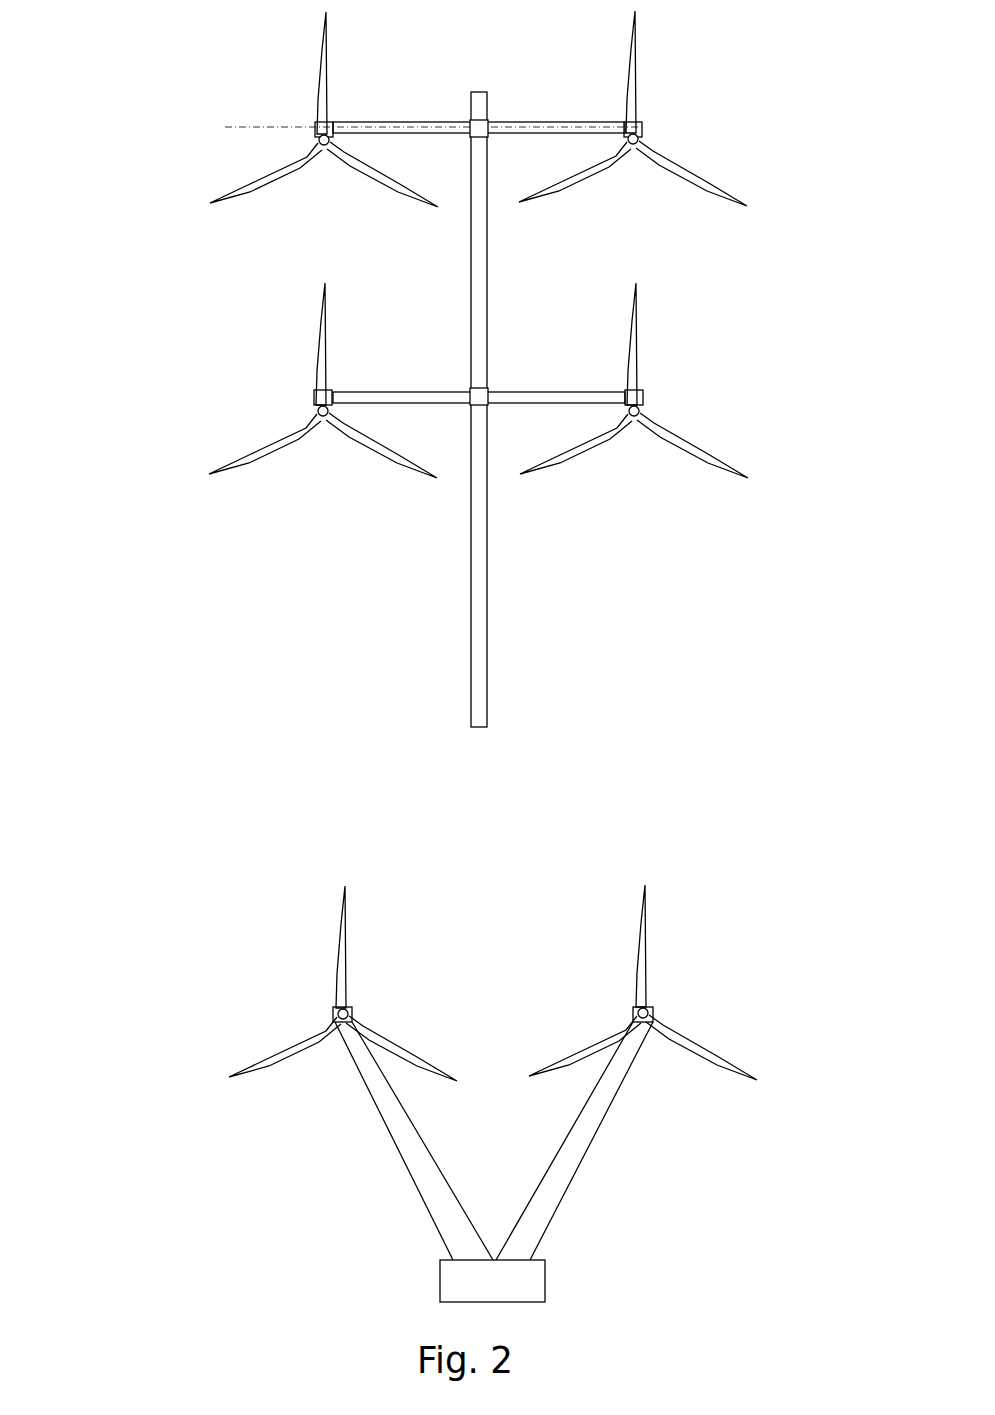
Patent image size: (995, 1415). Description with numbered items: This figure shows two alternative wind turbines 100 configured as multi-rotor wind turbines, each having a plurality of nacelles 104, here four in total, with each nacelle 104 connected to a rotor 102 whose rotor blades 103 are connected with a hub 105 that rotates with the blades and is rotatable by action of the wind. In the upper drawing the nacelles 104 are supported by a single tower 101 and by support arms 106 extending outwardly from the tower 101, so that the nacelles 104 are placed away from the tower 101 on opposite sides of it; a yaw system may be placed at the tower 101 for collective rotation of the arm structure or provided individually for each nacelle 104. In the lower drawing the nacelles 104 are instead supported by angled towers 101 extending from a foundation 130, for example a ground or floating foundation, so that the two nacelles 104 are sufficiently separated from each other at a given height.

The wind turbine 100 is at (138, 100).
The tower 101 is at (468, 583).
The rotor 102 is at (655, 128).
The rotor blade 103 is at (747, 192).
The nacelle 104 is at (305, 409).
The hub 105 is at (652, 404).
The support arm 106 is at (537, 117).
The foundation 130 is at (550, 1274).